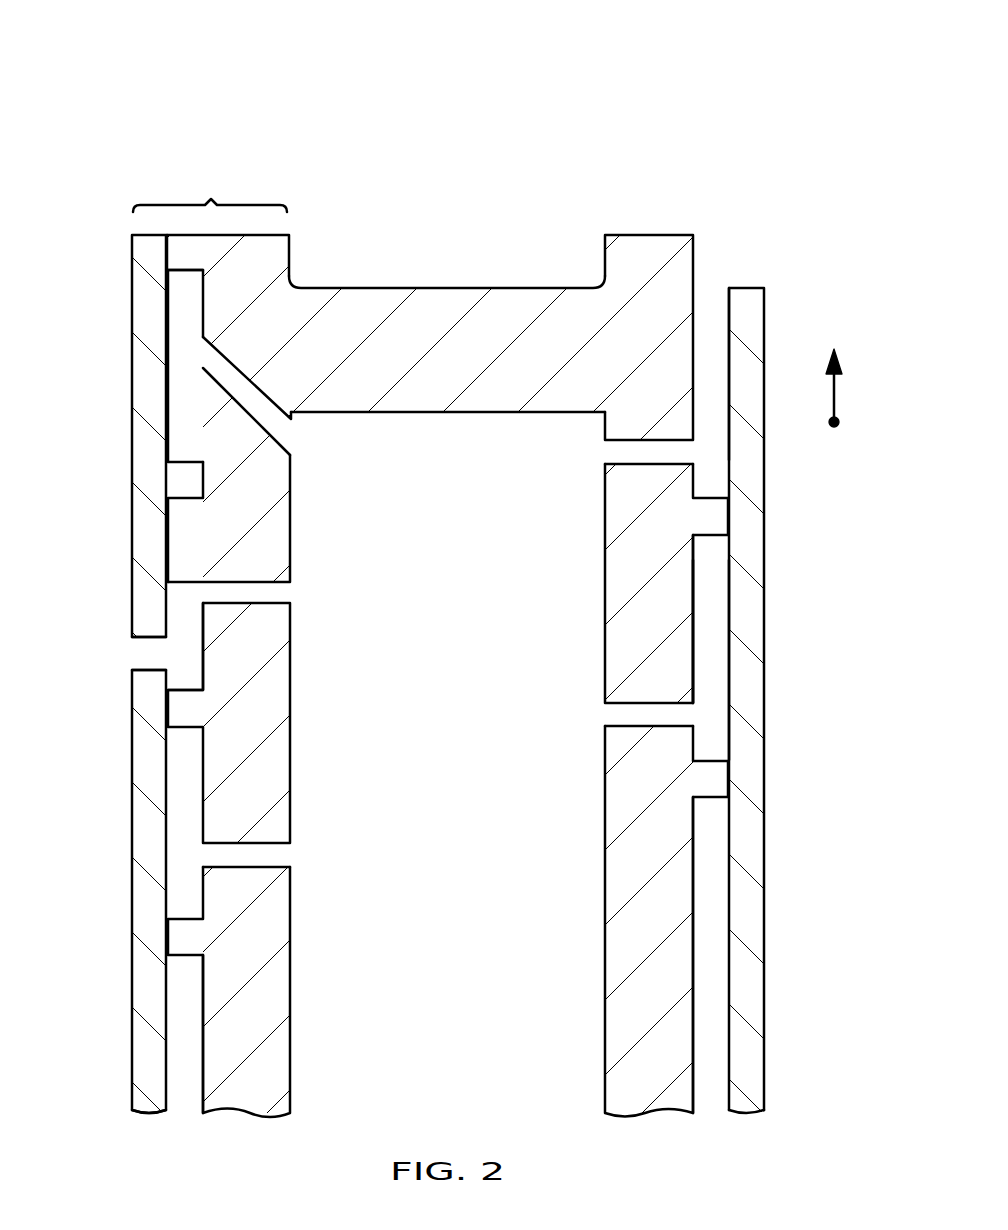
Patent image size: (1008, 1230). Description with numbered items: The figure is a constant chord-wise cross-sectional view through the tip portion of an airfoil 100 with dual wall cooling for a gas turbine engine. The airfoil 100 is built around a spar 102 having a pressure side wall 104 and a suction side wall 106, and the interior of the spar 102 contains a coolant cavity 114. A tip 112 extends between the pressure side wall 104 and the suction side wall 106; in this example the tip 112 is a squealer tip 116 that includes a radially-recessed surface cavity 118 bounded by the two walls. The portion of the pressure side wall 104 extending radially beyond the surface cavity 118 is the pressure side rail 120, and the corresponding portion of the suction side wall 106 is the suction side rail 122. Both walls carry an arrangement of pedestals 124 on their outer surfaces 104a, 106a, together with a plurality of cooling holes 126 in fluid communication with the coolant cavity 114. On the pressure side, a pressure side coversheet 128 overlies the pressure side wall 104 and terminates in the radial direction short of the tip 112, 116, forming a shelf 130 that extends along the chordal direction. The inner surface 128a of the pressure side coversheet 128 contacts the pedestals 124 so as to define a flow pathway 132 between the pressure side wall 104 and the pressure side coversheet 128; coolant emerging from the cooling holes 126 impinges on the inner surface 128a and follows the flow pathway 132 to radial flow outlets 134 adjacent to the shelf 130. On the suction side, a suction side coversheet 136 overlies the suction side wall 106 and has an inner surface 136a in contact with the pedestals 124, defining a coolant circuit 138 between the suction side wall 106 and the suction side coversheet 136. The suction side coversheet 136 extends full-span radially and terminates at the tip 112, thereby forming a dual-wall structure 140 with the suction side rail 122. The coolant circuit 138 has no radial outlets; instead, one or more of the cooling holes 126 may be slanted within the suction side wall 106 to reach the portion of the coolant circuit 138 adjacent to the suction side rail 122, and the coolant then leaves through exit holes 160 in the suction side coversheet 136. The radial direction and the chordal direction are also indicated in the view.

The airfoil 100 is at (758, 66).
The spar 102 is at (620, 178).
The pressure side wall 104 is at (610, 545).
The outer surface 104a is at (681, 631).
The suction side wall 106 is at (290, 780).
The outer surface 106a is at (202, 688).
The tip 112 is at (472, 198).
The squealer tip 116 is at (0, 0).
The coolant cavity 114 is at (370, 1060).
The surface cavity 118 is at (388, 287).
The pressure side rail 120 is at (650, 234).
The suction side rail 122 is at (293, 234).
The pedestals 124 is at (180, 503).
The cooling holes 126 is at (290, 437).
The pressure side coversheet 128 is at (760, 995).
The inner surface 128a is at (724, 1085).
The shelf 130 is at (770, 278).
The flow pathway 132 is at (710, 662).
The radial flow outlets 134 is at (714, 283).
The suction side coversheet 136 is at (140, 595).
The inner surface 136a is at (168, 1092).
The coolant circuit 138 is at (185, 405).
The dual-wall structure 140 is at (210, 190).
The exit holes 160 is at (140, 652).